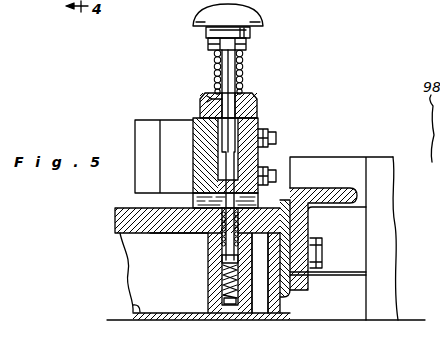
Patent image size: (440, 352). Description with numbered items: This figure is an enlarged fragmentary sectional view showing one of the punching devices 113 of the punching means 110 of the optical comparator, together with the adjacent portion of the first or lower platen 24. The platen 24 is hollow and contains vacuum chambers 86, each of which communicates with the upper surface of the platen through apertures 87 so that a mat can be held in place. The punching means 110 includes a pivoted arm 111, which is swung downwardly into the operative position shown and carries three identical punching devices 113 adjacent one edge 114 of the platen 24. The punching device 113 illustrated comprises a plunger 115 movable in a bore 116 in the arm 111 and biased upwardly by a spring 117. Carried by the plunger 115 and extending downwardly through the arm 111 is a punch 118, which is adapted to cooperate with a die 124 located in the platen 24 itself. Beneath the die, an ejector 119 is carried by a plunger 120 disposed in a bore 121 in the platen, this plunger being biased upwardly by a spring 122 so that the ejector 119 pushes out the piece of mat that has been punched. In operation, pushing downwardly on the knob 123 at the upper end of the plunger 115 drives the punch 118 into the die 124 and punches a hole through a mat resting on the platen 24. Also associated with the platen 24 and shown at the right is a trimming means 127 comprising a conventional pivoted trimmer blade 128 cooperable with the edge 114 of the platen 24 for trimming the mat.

The first or lower platen 24 is at (118, 210).
The vacuum chamber 86 is at (133, 306).
The aperture 87 is at (160, 238).
The punching means 110 is at (252, 57).
The pivoted arm 111 is at (262, 154).
The punching device 113 is at (259, 93).
The edge of the platen 114 is at (293, 291).
The plunger 115 is at (212, 104).
The bore 116 is at (244, 129).
The spring 117 is at (213, 66).
The punch 118 is at (227, 160).
The ejector 119 is at (214, 231).
The plunger 120 is at (222, 265).
The bore 121 is at (221, 254).
The spring 122 is at (221, 291).
The knob 123 is at (200, 28).
The die 124 is at (241, 208).
The trimming means 127 is at (330, 188).
The trimmer blade 128 is at (292, 230).